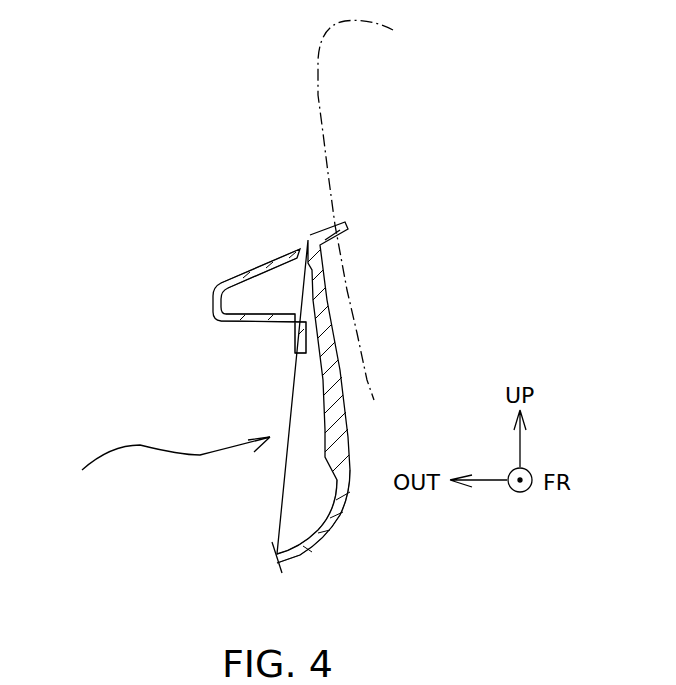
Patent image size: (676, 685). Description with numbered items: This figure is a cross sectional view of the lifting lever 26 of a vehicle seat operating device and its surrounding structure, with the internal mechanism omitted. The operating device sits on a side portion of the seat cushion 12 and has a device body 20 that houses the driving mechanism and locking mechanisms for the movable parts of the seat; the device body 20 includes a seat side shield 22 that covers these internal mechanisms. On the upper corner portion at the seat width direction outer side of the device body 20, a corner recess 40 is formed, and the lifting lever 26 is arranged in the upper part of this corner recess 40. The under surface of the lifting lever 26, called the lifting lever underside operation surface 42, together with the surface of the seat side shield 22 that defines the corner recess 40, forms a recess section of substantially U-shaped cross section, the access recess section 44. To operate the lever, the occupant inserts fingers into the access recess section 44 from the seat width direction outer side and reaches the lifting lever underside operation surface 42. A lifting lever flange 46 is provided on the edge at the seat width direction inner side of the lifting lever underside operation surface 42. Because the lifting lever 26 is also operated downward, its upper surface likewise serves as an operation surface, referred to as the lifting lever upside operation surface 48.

The seat cushion 12 is at (315, 62).
The device body 20 is at (312, 218).
The seat side shield 22 is at (332, 533).
The lifting lever 26 is at (217, 265).
The corner recess 40 is at (328, 513).
The lifting lever underside operation surface 42 is at (252, 325).
The access recess section 44 is at (159, 464).
The lifting lever flange 46 is at (293, 345).
The lifting lever upside operation surface 48 is at (263, 258).